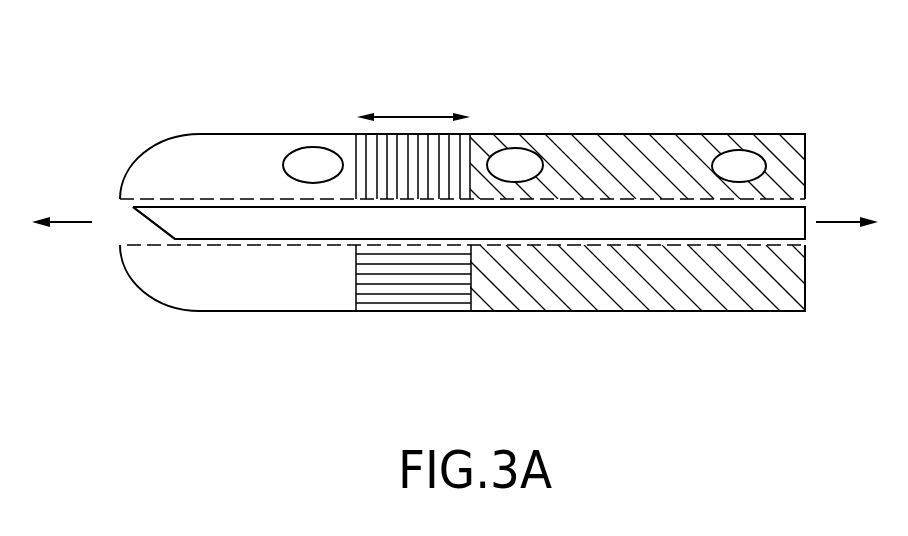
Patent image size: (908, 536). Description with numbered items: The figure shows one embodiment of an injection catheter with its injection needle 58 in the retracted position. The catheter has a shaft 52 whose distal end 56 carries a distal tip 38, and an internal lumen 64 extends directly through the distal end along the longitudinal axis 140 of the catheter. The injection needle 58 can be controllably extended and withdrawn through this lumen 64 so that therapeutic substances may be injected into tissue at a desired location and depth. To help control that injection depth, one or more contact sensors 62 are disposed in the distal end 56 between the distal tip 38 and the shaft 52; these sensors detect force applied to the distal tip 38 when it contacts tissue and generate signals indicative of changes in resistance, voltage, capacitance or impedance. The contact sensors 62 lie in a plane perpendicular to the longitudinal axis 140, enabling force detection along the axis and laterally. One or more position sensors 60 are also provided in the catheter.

The distal tip 38 is at (175, 136).
The shaft 52 is at (655, 283).
The distal end 56 is at (436, 66).
The injection needle 58 is at (245, 220).
The position sensors 60 is at (300, 155).
The contact sensors 62 is at (472, 137).
The internal lumen 64 is at (120, 233).
The longitudinal axis 140 is at (72, 221).